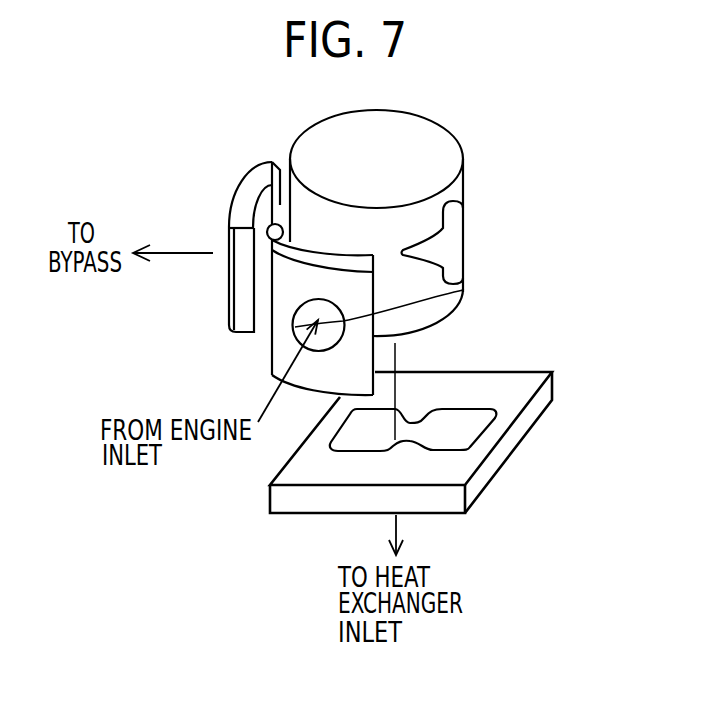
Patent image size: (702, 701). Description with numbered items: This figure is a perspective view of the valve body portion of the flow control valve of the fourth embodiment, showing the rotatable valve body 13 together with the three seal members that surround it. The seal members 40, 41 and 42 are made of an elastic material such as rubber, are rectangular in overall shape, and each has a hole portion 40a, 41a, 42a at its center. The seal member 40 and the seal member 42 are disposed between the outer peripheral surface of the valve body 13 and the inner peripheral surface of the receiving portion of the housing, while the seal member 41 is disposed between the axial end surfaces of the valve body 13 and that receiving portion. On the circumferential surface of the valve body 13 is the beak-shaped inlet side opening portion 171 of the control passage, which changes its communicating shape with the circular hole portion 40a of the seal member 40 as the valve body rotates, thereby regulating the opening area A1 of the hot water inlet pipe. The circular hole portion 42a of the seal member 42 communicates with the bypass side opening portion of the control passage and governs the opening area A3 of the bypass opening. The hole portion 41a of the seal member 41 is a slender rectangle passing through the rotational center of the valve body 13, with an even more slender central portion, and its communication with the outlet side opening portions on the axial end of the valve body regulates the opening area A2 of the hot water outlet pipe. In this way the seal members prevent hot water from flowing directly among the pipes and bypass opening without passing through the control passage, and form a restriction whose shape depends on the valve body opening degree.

The valve body 13 is at (413, 141).
The inlet side opening portion 171 is at (452, 241).
The seal member 40 is at (282, 362).
The hole portion 40a is at (295, 327).
The opening area of the first hot water inlet pipe A1 is at (463, 291).
The seal member 42 is at (243, 192).
The hole portion 42a is at (274, 162).
The opening area of the bypass opening A3 is at (267, 228).
The seal member 41 is at (281, 507).
The hole portion 41a is at (475, 452).
The opening area of the first hot water outlet pipe A2 is at (462, 443).